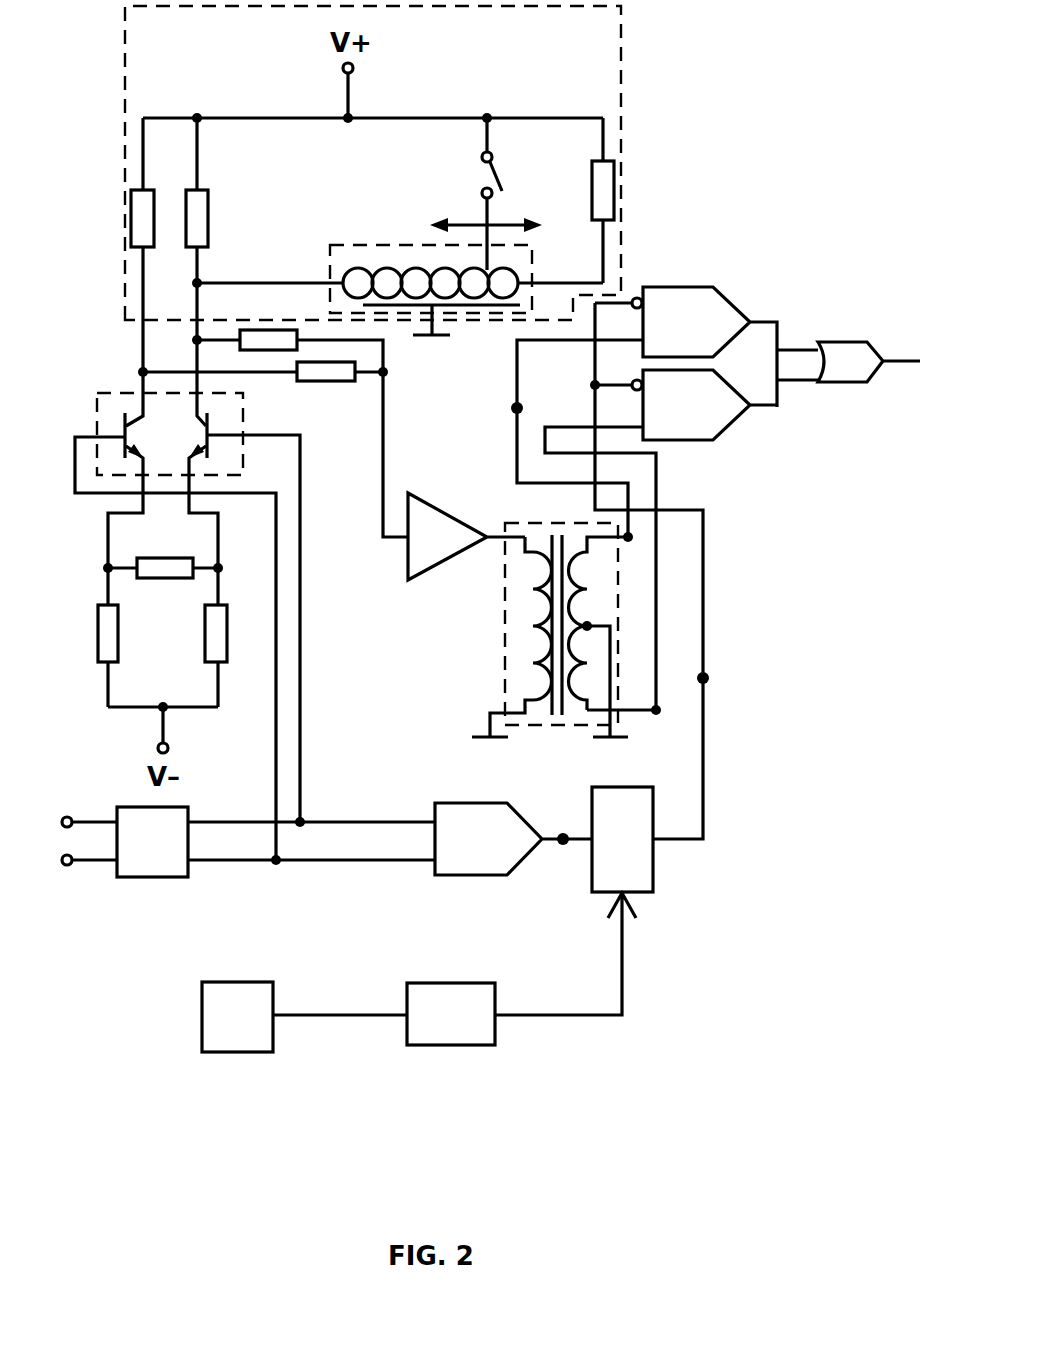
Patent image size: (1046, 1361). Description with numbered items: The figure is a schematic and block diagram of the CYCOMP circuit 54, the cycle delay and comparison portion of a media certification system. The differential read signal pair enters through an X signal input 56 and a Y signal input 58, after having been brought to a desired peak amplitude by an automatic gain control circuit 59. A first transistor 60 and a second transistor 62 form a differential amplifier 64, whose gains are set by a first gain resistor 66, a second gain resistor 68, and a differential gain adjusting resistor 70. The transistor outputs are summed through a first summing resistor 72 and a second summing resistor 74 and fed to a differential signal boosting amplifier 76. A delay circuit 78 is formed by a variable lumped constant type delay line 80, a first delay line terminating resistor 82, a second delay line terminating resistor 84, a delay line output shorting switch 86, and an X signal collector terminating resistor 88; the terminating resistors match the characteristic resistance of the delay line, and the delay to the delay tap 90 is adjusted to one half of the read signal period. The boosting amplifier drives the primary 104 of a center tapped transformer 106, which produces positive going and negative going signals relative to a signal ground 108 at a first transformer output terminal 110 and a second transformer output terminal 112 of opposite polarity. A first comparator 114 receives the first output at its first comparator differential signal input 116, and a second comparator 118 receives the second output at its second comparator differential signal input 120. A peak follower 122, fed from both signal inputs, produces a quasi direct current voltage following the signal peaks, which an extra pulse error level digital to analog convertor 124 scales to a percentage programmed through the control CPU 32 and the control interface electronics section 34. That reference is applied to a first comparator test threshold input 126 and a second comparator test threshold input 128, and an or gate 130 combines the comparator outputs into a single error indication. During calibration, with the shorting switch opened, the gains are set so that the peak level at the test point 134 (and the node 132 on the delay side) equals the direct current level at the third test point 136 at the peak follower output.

The control CPU 32 is at (254, 1030).
The control interface electronics section 34 is at (468, 1028).
The CYCOMP circuit 54 is at (792, 152).
The X signal input 56 is at (66, 816).
The Y signal input 58 is at (66, 866).
The automatic gain control circuit 59 is at (170, 858).
The first transistor 60 is at (124, 420).
The second transistor 62 is at (210, 424).
The differential amplifier 64 is at (185, 446).
The first gain resistor 66 is at (98, 618).
The second gain resistor 68 is at (205, 634).
The differential gain adjusting resistor 70 is at (160, 580).
The first summing resistor 72 is at (300, 382).
The second summing resistor 74 is at (283, 330).
The differential signal boosting amplifier 76 is at (450, 554).
The delay circuit 78 is at (122, 120).
The variable lumped constant type delay line 80 is at (487, 300).
The first delay line terminating resistor 82 is at (208, 210).
The second delay line terminating resistor 84 is at (614, 186).
The delay line output shorting switch 86 is at (493, 155).
The X signal collector terminating resistor 88 is at (131, 220).
The delay tap 90 is at (492, 258).
The primary 104 is at (530, 612).
The center tapped transformer 106 is at (535, 523).
The signal ground 108 is at (480, 740).
The first transformer output terminal 110 is at (634, 538).
The second transformer output terminal 112 is at (660, 711).
The first comparator 114 is at (711, 338).
The first comparator differential signal input 116 is at (640, 340).
The second comparator 118 is at (711, 420).
The second comparator differential signal input 120 is at (640, 434).
The peak follower 122 is at (505, 855).
The extra pulse error level digital to analog convertor 124 is at (650, 851).
The first comparator test threshold input 126 is at (637, 298).
The second comparator test threshold input 128 is at (632, 388).
The or gate 130 is at (873, 375).
The node 132 is at (512, 410).
The test point 134 is at (708, 678).
The third test point 136 is at (564, 846).